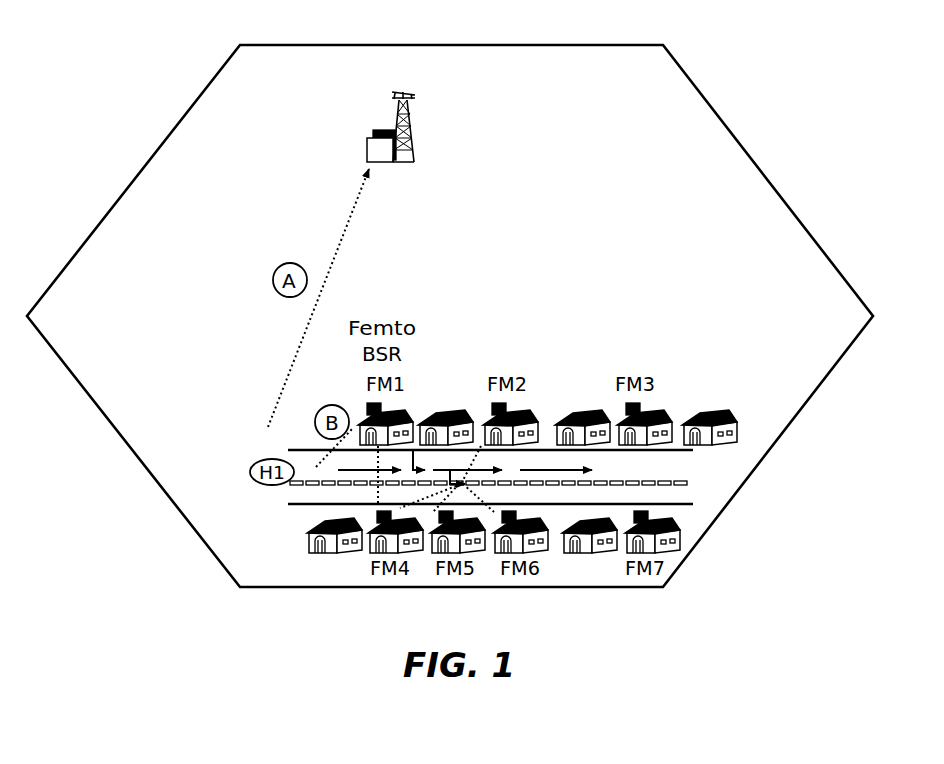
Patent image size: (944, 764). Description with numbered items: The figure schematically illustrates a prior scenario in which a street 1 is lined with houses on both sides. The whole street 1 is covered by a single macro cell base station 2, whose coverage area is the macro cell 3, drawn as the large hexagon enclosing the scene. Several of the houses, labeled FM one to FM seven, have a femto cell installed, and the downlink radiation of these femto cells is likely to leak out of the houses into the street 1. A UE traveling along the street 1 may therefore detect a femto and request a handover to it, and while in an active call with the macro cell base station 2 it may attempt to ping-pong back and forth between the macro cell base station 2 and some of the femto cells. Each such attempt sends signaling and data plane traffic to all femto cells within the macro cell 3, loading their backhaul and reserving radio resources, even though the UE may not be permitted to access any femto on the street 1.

The street 1 is at (695, 465).
The macro cell base station 2 is at (458, 108).
The macro cell 3 is at (740, 182).